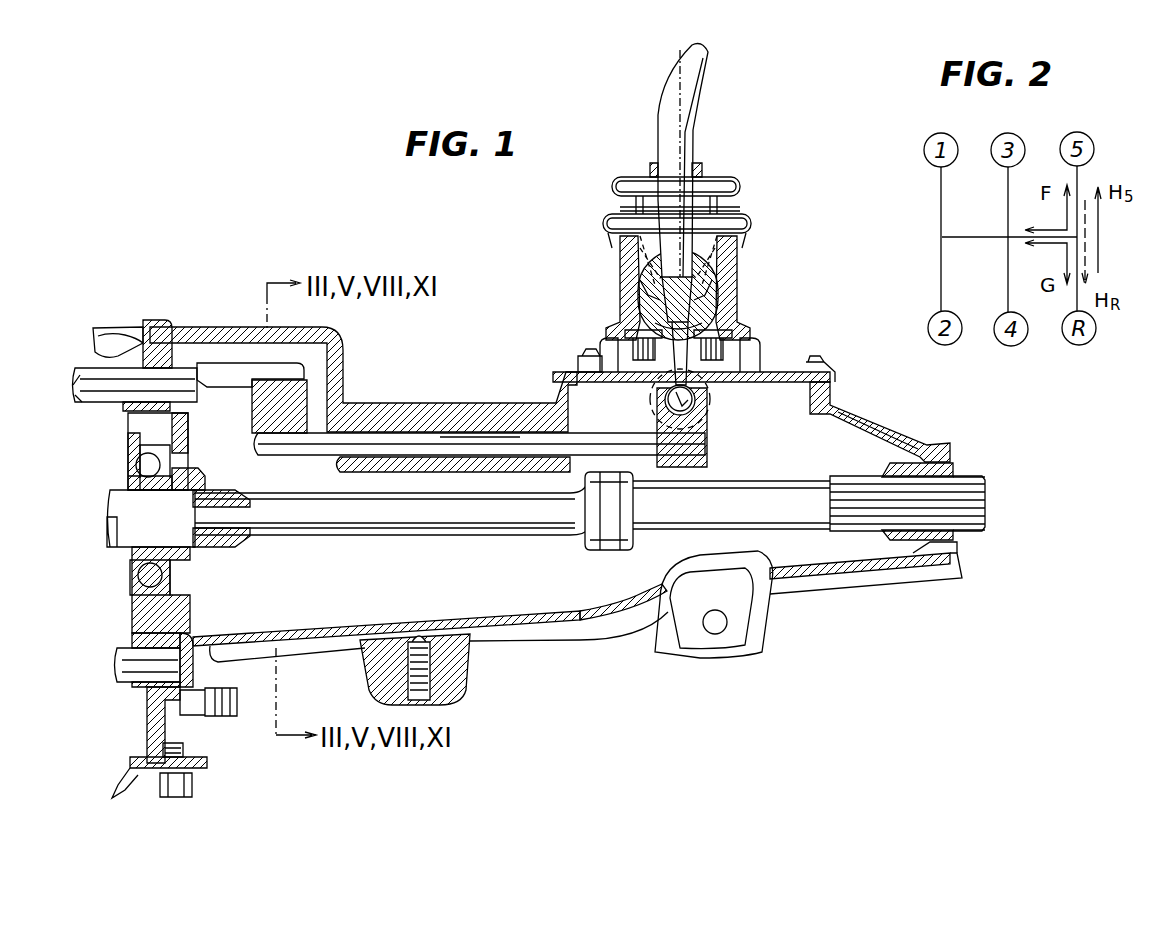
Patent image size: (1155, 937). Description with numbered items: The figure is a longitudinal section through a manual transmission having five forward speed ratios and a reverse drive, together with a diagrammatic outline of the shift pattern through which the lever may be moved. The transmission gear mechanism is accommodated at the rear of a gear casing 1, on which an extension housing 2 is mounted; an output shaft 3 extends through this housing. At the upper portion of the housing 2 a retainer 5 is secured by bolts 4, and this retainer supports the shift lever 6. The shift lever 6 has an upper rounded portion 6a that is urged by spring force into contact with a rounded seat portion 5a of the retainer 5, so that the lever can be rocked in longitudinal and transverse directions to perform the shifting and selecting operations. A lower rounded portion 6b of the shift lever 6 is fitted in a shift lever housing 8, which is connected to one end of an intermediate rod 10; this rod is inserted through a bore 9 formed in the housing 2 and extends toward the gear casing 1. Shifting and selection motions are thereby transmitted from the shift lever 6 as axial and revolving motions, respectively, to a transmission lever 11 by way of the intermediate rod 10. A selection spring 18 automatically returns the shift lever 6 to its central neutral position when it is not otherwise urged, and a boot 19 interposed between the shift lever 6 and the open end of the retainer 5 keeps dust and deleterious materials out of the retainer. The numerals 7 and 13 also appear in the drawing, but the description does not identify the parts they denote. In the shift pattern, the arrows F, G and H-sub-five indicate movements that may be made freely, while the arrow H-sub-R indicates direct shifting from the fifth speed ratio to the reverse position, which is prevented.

The gear casing 1 is at (106, 335).
The extension housing 2 is at (446, 415).
The output shaft 3 is at (460, 534).
The bolts 4 is at (580, 356).
The retainer 5 is at (722, 292).
The rounded seat portion 5a is at (738, 316).
The shift lever 6 is at (690, 132).
The upper rounded portion 6a is at (640, 283).
The lower rounded portion 6b is at (692, 399).
The seat 7 is at (718, 262).
The shift lever housing 8 is at (707, 461).
The bore 9 is at (476, 433).
The intermediate rod 10 is at (416, 436).
The transmission lever 11 is at (252, 411).
The input shaft 13 is at (97, 393).
The selection spring 18 is at (625, 318).
The boot 19 is at (740, 186).